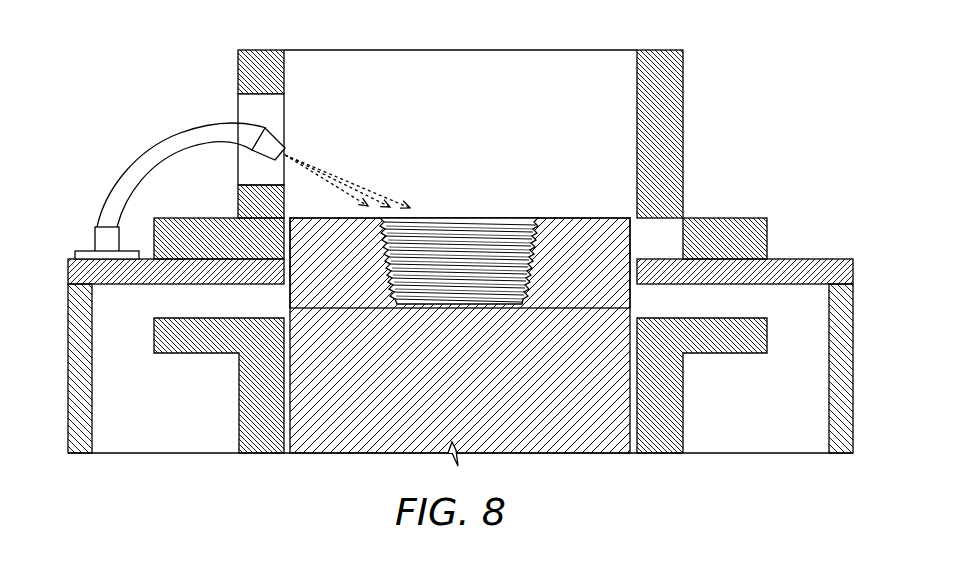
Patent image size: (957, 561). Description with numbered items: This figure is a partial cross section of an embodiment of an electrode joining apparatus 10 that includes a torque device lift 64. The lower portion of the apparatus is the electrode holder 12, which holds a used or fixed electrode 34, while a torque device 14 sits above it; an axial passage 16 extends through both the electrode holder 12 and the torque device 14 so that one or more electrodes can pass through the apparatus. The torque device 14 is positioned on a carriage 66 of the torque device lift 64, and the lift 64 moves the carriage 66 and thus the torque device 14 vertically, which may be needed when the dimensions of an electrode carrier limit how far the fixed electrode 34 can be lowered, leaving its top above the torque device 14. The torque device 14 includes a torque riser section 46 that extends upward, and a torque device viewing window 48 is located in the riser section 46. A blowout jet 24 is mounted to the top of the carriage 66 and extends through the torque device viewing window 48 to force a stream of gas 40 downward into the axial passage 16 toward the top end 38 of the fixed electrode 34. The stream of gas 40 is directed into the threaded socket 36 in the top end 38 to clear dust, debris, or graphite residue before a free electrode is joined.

The electrode joining apparatus 10 is at (778, 66).
The electrode holder 12 is at (251, 410).
The torque device 14 is at (248, 78).
The axial passage 16 is at (453, 168).
The blowout jet 24 is at (142, 148).
The fixed electrode 34 is at (553, 437).
The threaded socket 36 is at (497, 238).
The top end 38 is at (565, 240).
The stream of gas 40 is at (341, 180).
The torque riser section 46 is at (258, 58).
The torque device viewing window 48 is at (248, 112).
The torque device lift 64 is at (72, 436).
The carriage 66 is at (72, 272).